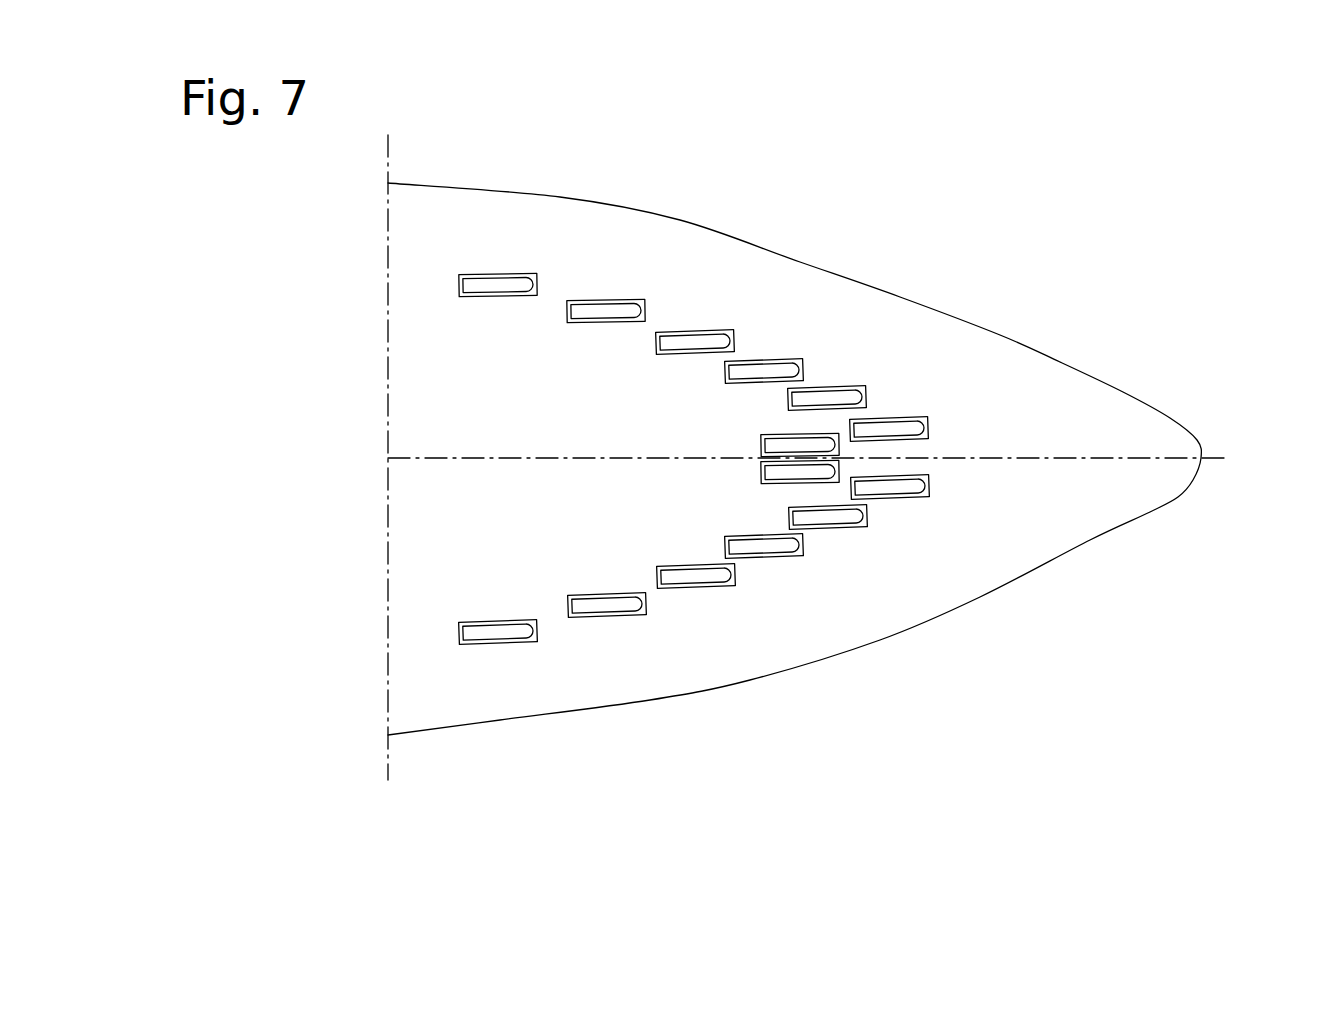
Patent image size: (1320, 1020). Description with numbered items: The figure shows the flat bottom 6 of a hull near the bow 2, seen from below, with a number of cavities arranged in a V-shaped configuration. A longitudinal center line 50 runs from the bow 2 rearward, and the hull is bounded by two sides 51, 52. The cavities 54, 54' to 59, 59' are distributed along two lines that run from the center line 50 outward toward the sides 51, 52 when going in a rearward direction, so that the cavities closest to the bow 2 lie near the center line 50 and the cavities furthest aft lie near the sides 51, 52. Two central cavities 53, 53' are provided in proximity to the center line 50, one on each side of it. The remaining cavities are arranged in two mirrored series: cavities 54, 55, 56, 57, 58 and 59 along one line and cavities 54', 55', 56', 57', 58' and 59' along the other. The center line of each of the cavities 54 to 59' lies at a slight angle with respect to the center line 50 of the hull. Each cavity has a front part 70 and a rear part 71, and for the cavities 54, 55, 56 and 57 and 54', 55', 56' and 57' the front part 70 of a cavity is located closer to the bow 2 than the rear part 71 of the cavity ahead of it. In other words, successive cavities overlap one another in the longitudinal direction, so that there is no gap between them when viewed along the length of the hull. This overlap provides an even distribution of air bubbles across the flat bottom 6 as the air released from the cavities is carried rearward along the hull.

The bow 2 is at (1108, 432).
The flat bottom 6 is at (430, 487).
The center line 50 is at (1165, 460).
The side 51 is at (562, 196).
The side 52 is at (647, 706).
The central cavity 53 is at (776, 477).
The central cavity 53' is at (777, 427).
The cavity 54 is at (903, 507).
The cavity 54' is at (904, 409).
The cavity 55 is at (832, 541).
The cavity 55' is at (832, 381).
The cavity 56 is at (764, 568).
The cavity 56' is at (764, 353).
The cavity 57 is at (696, 598).
The cavity 57' is at (695, 322).
The cavity 58 is at (607, 629).
The cavity 58' is at (606, 293).
The cavity 59 is at (498, 656).
The cavity 59' is at (494, 266).
The front part 70 is at (926, 432).
The rear part 71 is at (862, 433).